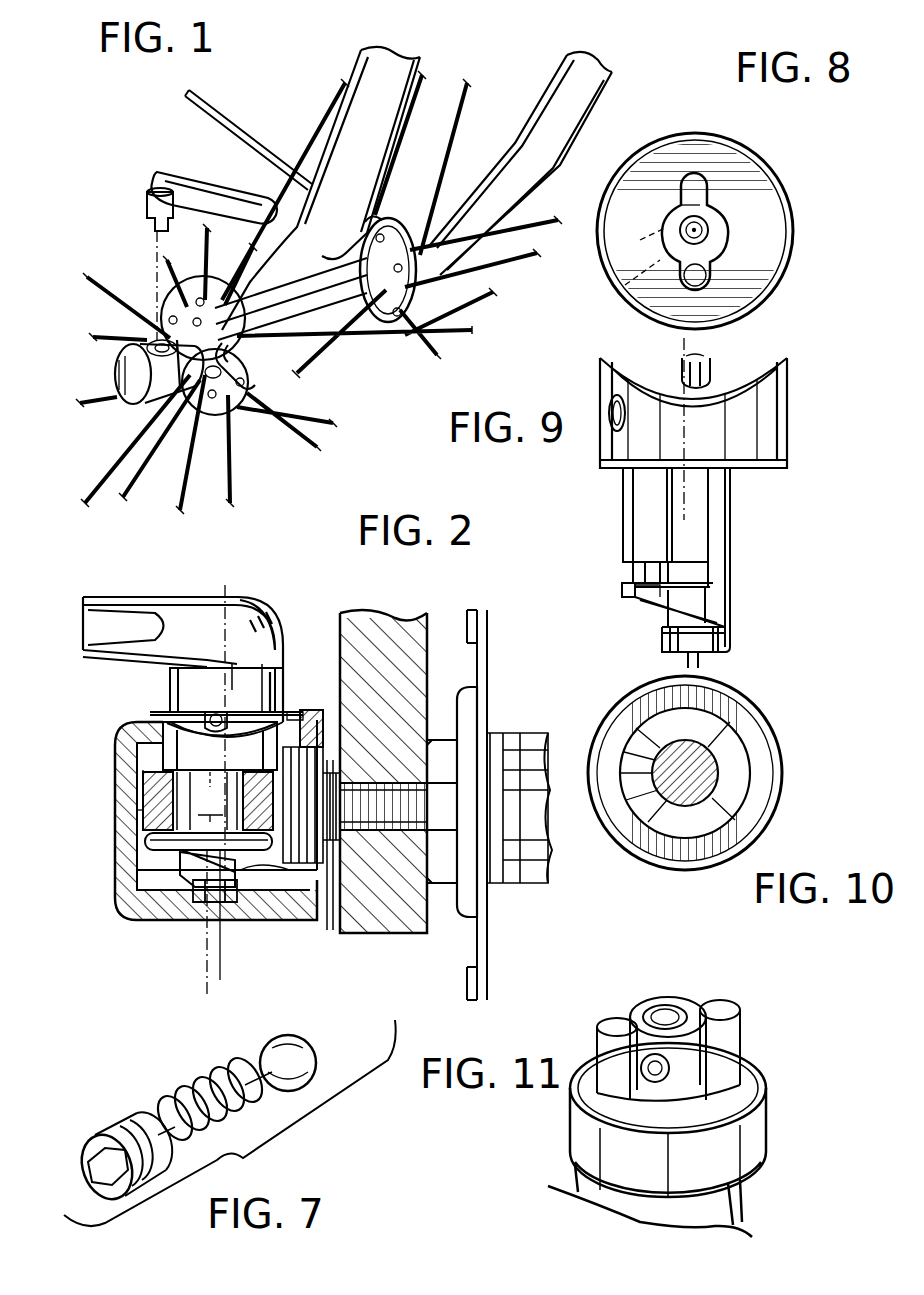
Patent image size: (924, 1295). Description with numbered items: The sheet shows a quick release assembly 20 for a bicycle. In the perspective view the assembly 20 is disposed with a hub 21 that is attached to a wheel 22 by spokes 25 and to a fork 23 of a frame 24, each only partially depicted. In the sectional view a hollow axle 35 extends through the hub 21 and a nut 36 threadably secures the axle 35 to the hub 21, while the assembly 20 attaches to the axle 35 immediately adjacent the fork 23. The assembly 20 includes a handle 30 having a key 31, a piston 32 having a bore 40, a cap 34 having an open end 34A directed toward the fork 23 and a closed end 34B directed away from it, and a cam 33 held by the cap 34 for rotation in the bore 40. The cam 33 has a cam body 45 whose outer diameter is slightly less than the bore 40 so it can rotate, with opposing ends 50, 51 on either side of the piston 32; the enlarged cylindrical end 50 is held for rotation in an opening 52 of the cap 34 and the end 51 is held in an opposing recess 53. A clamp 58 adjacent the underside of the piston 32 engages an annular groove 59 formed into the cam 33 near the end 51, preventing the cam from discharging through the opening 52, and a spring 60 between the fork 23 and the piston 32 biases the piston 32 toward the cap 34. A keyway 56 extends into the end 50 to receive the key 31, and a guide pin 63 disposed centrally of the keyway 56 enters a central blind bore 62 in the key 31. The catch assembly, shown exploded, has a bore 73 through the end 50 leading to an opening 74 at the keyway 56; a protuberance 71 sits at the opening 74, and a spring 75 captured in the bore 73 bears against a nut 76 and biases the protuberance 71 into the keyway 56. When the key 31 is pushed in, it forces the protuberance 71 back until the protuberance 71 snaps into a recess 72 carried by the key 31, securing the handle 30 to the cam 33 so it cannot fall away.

In FIG. 1, the quick release assembly 20 is at (108, 379).
In FIG. 2, the quick release assembly 20 is at (74, 690).
In FIG. 1, the hub 21 is at (340, 340).
In FIG. 2, the hub 21 is at (528, 735).
In FIG. 1, the wheel 22 is at (220, 127).
In FIG. 1, the fork 23 is at (530, 137).
In FIG. 2, the fork 23 is at (437, 617).
In FIG. 1, the frame 24 is at (598, 101).
In FIG. 1, the spokes 25 is at (290, 400).
In FIG. 1, the handle 30 is at (207, 193).
In FIG. 2, the handle 30 is at (190, 602).
In FIG. 11, the handle 30 is at (720, 1210).
In FIG. 1, the key 31 is at (150, 208).
In FIG. 2, the key 31 is at (240, 690).
In FIG. 11, the key 31 is at (745, 1027).
In FIG. 2, the piston 32 is at (143, 813).
In FIG. 8, the cam 33 is at (766, 158).
In FIG. 9, the cam 33 is at (731, 511).
In FIG. 10, the cam 33 is at (720, 739).
In FIG. 2, the cam 33 is at (125, 785).
In FIG. 2, the cap 34 is at (140, 857).
In FIG. 2, the open end 34A is at (332, 700).
In FIG. 2, the closed end 34B is at (130, 793).
In FIG. 2, the hollow axle 35 is at (397, 860).
In FIG. 2, the nut 36 is at (440, 725).
In FIG. 2, the bore 40 is at (213, 805).
In FIG. 9, the cam body 45 is at (647, 517).
In FIG. 10, the cam body 45 is at (642, 733).
In FIG. 2, the cam body 45 is at (128, 735).
In FIG. 8, the end 50 is at (728, 214).
In FIG. 9, the end 50 is at (757, 400).
In FIG. 10, the end 50 is at (770, 826).
In FIG. 2, the end 50 is at (152, 728).
In FIG. 9, the end 51 is at (727, 637).
In FIG. 10, the end 51 is at (690, 800).
In FIG. 2, the end 51 is at (287, 897).
In FIG. 2, the opening 52 is at (283, 680).
In FIG. 2, the recess 53 is at (260, 893).
In FIG. 8, the keyway 56 is at (680, 204).
In FIG. 9, the keyway 56 is at (683, 362).
In FIG. 2, the keyway 56 is at (213, 712).
In FIG. 2, the clamp 58 is at (130, 900).
In FIG. 9, the annular groove 59 is at (633, 573).
In FIG. 2, the annular groove 59 is at (190, 870).
In FIG. 2, the spring 60 is at (333, 830).
In FIG. 11, the central blind bore 62 is at (660, 1012).
In FIG. 8, the guide pin 63 is at (618, 280).
In FIG. 9, the guide pin 63 is at (715, 365).
In FIG. 8, the protuberance 71 is at (705, 262).
In FIG. 7, the protuberance 71 is at (300, 1062).
In FIG. 11, the recess 72 is at (640, 1085).
In FIG. 8, the bore 73 is at (650, 258).
In FIG. 8, the opening 74 is at (690, 218).
In FIG. 7, the spring 75 is at (197, 1092).
In FIG. 9, the nut 76 is at (611, 432).
In FIG. 7, the nut 76 is at (105, 1130).